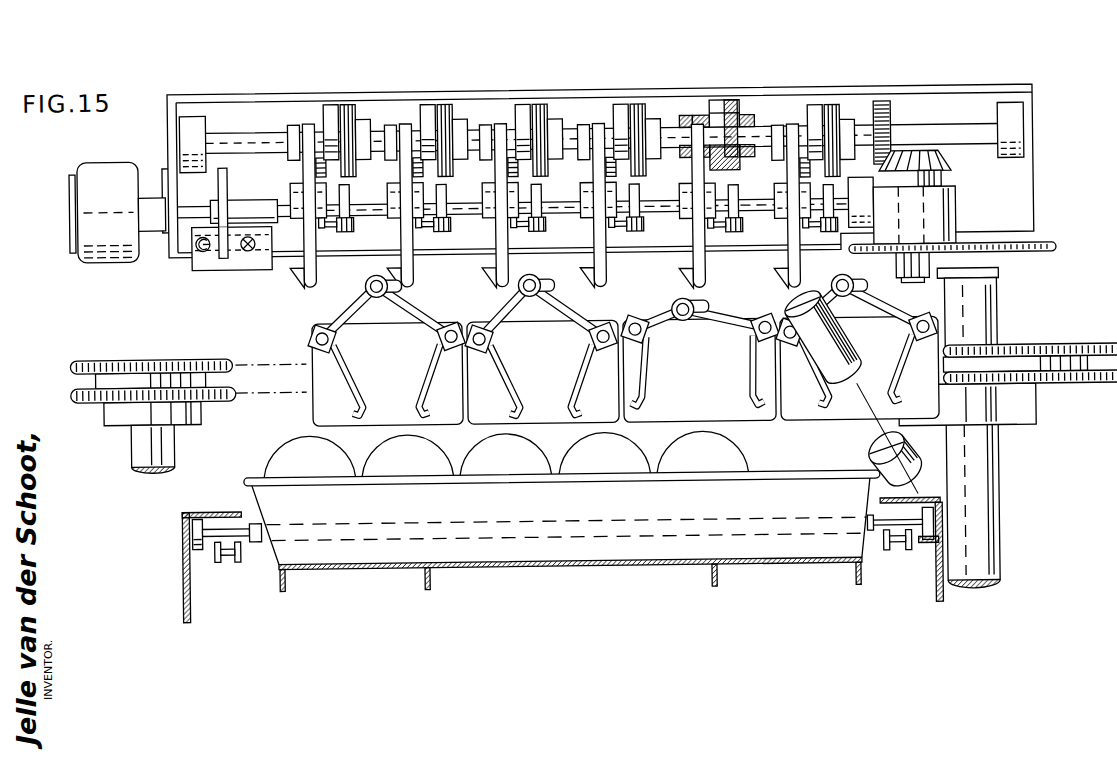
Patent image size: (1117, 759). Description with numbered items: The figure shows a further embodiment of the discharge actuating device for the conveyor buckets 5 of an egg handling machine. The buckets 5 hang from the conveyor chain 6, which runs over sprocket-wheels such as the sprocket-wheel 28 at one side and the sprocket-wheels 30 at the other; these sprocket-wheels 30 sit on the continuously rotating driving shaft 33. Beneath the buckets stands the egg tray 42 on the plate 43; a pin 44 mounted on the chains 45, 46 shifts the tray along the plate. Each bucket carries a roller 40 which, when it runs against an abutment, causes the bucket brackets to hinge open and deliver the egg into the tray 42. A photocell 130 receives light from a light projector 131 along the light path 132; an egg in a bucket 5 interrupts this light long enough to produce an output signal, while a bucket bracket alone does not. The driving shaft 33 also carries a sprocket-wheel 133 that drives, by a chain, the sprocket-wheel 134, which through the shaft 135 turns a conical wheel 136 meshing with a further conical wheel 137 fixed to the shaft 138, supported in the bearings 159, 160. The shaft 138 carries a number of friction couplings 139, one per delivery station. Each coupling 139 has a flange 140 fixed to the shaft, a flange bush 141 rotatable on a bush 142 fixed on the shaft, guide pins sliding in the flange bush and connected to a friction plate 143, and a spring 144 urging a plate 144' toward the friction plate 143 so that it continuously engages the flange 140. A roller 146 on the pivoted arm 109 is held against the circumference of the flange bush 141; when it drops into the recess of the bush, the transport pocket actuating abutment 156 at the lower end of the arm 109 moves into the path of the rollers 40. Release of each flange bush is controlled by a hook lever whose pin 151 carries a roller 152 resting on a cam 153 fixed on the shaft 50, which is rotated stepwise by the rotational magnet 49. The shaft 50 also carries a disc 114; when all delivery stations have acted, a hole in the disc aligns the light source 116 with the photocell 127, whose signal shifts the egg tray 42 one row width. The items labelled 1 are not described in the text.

The article 1 is at (742, 462).
The conveyor bucket 5 is at (389, 412).
The chain 6 is at (276, 360).
The sprocket-wheel 28 is at (84, 355).
The sprocket-wheel 30 is at (1097, 350).
The driving shaft 33 is at (998, 492).
The roller 40 is at (366, 288).
The egg tray 42 is at (609, 562).
The plate 43 is at (430, 582).
The pin 44 is at (258, 539).
The chain 45 is at (228, 560).
The chain 46 is at (896, 555).
The rotational magnet 49 is at (111, 157).
The shaft 50 is at (473, 214).
The arm 109 is at (402, 238).
The disc 114 is at (229, 183).
The light source 116 is at (250, 247).
The photocell 127 is at (205, 247).
The photocell 130 is at (872, 447).
The light projector 131 is at (846, 338).
The light path 132 is at (840, 416).
The sprocket-wheel 133 is at (1056, 254).
The sprocket-wheel 134 is at (852, 253).
The shaft 135 is at (957, 206).
The conical wheel 136 is at (953, 170).
The conical wheel 137 is at (882, 105).
The shaft 138 is at (950, 128).
The friction coupling 139 is at (842, 108).
The flange 140 is at (752, 117).
The flange bush 141 is at (429, 103).
The bush 142 is at (684, 117).
The friction plate 143 is at (740, 102).
The spring 144 is at (740, 167).
The plate 144' is at (728, 77).
The roller 146 is at (334, 102).
The pin 151 is at (614, 236).
The roller 152 is at (641, 230).
The cam 153 is at (346, 184).
The transport pocket actionating abutment 156 is at (484, 270).
The bearing 159 is at (1026, 118).
The bearing 160 is at (192, 110).